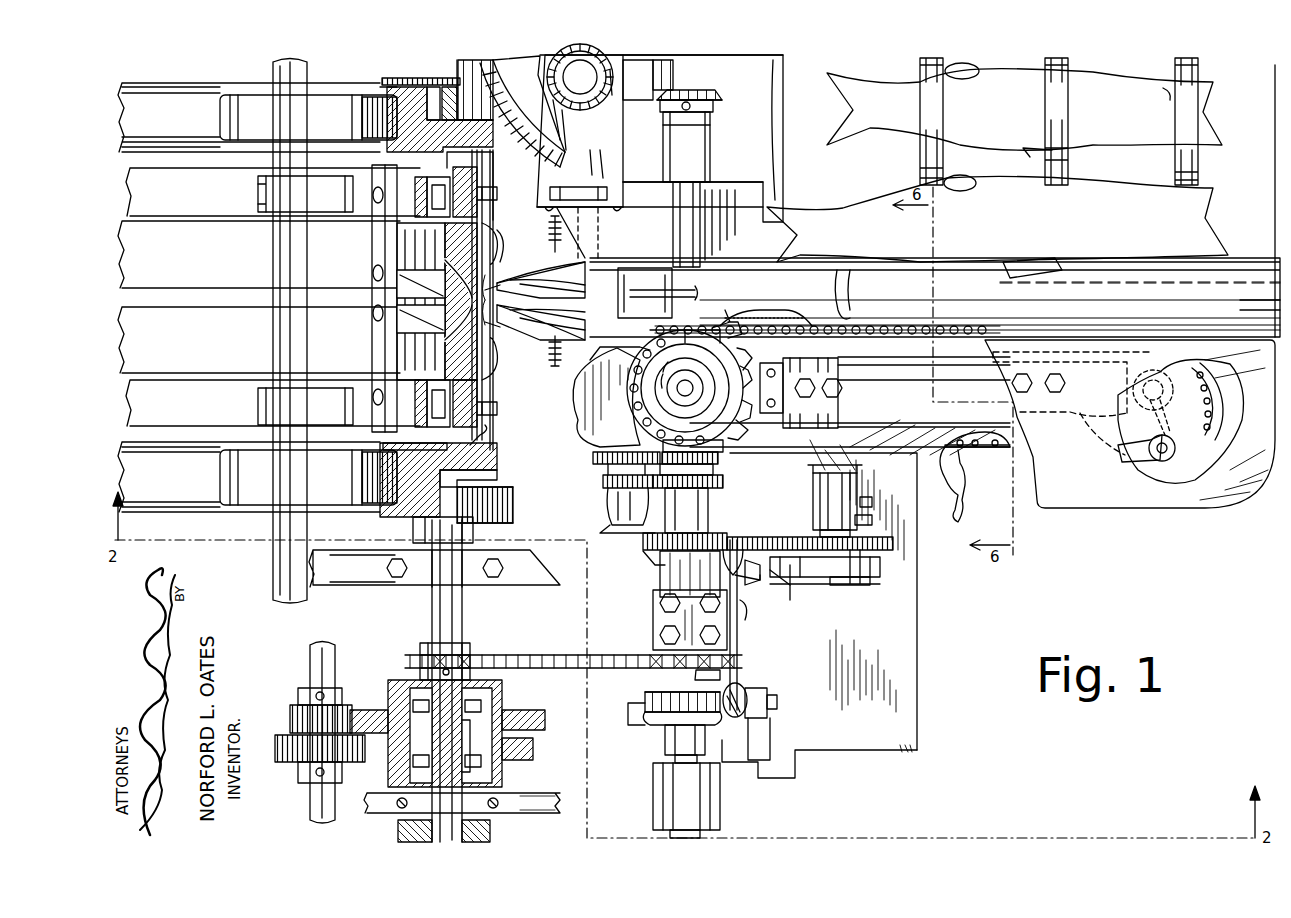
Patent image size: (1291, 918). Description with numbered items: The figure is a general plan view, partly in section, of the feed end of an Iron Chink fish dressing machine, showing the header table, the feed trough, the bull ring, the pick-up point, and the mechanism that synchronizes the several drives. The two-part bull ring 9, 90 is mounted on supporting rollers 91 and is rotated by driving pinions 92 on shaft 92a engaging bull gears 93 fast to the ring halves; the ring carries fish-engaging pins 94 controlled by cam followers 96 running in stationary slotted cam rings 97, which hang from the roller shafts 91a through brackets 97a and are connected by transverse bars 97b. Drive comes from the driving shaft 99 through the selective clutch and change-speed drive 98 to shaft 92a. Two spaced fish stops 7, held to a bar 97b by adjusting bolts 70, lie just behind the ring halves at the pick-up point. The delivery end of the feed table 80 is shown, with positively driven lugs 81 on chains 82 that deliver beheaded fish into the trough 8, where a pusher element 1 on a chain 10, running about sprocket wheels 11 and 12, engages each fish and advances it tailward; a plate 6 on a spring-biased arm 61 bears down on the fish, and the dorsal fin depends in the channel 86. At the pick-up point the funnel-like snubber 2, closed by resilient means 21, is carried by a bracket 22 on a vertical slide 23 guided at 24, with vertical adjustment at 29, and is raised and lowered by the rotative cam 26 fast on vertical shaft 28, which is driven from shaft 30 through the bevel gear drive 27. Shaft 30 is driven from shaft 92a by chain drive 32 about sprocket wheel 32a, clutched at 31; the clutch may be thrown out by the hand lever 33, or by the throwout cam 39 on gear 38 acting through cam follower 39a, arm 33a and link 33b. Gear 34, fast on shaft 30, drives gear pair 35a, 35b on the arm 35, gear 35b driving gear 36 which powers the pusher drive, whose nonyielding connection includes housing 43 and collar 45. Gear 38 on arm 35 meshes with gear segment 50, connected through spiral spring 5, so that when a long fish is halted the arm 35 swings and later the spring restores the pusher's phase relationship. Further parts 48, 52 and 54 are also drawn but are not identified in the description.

The pusher element 1 is at (993, 484).
The snubber 2 is at (523, 283).
The spiral spring 5 is at (872, 572).
The hold-down plate 6 is at (645, 293).
The fish stops 7 is at (410, 268).
The trough 8 is at (1117, 272).
The bull ring part 9 is at (486, 243).
The chain 10 is at (890, 332).
The sprocket wheel 11 is at (740, 425).
The sprocket wheel 12 is at (1176, 455).
The resilient means 21 is at (554, 354).
The bracket 22 is at (688, 240).
The vertical slide 23 is at (575, 188).
The guide 24 is at (618, 193).
The rotative channel-like cam 26 is at (536, 160).
The bevel gear drive 27 is at (685, 95).
The vertical shaft 28 is at (580, 84).
The vertical adjustment 29 is at (556, 226).
The shaft 30 is at (678, 760).
The clutch means 31 is at (662, 684).
The chain drive 32 is at (618, 655).
The sprocket wheel 32a is at (740, 669).
The hand lever 33 is at (750, 700).
The arm 33a is at (740, 580).
The link 33b is at (742, 617).
The gear 34 is at (722, 482).
The arm 35 is at (650, 530).
The gear 35a is at (608, 485).
The gear 35b is at (596, 459).
The gear 36 is at (722, 457).
The gear 38 is at (650, 548).
The throwout cam 39 is at (660, 570).
The cam follower 39a is at (722, 578).
The housing 43 is at (642, 396).
The collar 45 is at (770, 380).
The ball bearing 48 is at (658, 400).
The gear segment 50 is at (882, 540).
The motor 52 is at (857, 492).
The bolt 54 is at (873, 502).
The spring-biased arm 61 is at (700, 297).
The adjusting bolts 70 is at (372, 298).
The feed table 80 is at (1262, 229).
The lugs 81 is at (935, 183).
The chains 82 is at (1172, 162).
The channel 86 is at (1243, 300).
The bull ring part 90 is at (483, 365).
The supporting rollers 91 is at (228, 118).
The shaft 91a is at (276, 260).
The driving pinions 92 is at (420, 80).
The shaft 92a is at (464, 612).
The bull gears 93 is at (400, 78).
The fish-engaging pins 94 is at (483, 336).
The cam followers 96 is at (482, 425).
The cam rings 97 is at (418, 213).
The brackets 97a is at (260, 194).
The transverse bars 97b is at (385, 347).
The selective clutch and change-speed drive 98 is at (380, 705).
The driving shaft 99 is at (315, 667).